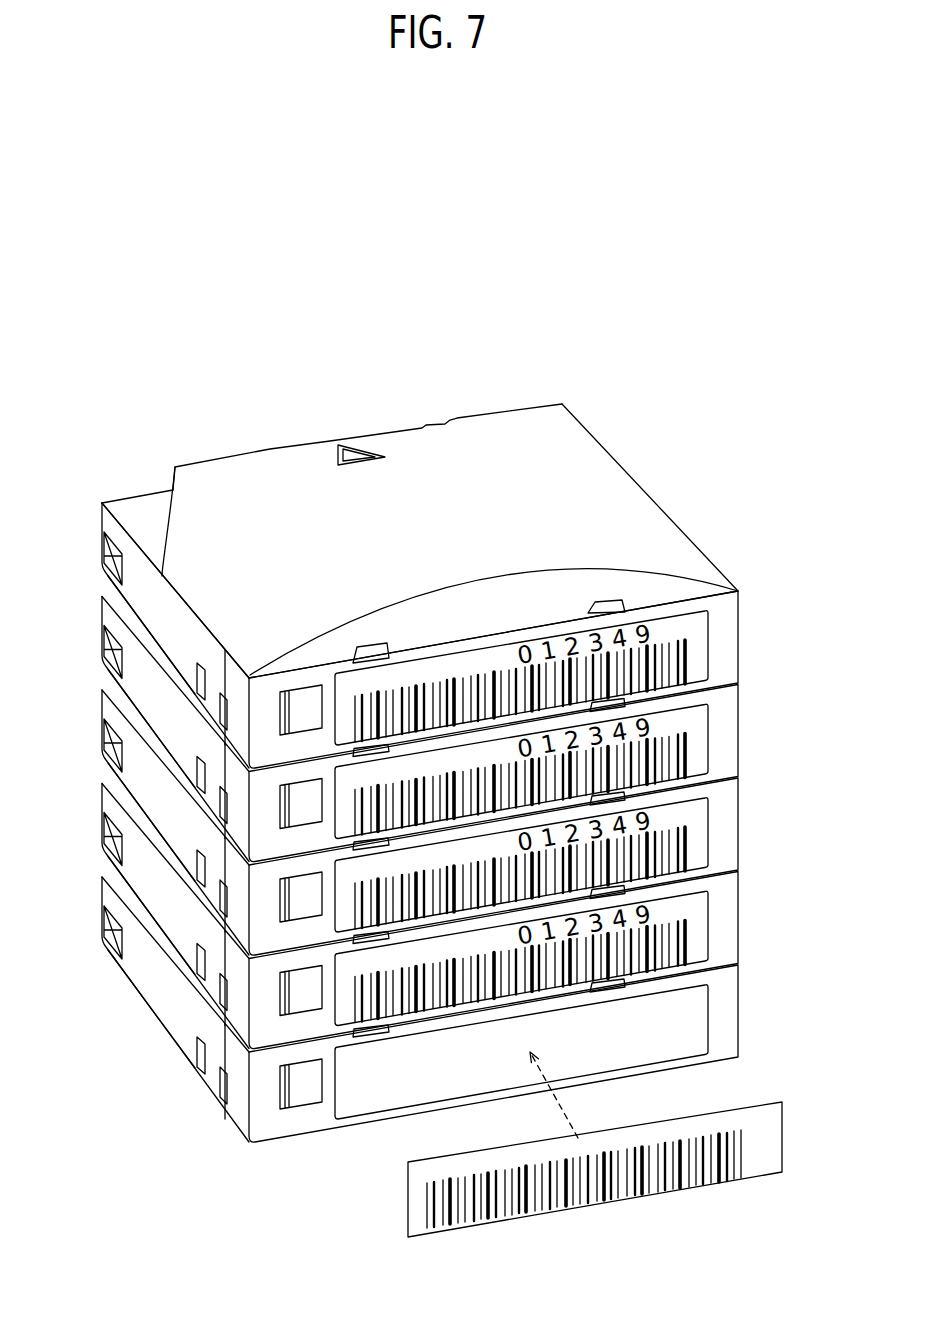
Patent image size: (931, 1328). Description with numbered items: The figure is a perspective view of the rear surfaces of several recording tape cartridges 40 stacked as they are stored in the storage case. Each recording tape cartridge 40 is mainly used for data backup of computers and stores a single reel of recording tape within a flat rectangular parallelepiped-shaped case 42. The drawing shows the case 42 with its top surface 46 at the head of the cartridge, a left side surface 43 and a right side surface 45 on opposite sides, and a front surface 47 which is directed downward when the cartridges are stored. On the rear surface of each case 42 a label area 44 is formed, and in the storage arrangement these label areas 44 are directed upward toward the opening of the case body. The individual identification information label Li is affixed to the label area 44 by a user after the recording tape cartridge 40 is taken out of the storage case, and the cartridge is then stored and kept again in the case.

The recording tape cartridge 40 is at (637, 415).
The case 42 is at (272, 446).
The left side surface 43 is at (183, 1010).
The label area 44 is at (357, 1097).
The right side surface 45 is at (740, 1025).
The top surface 46 is at (493, 475).
The front surface 47 is at (127, 497).
The individual identification information label Li is at (760, 1152).